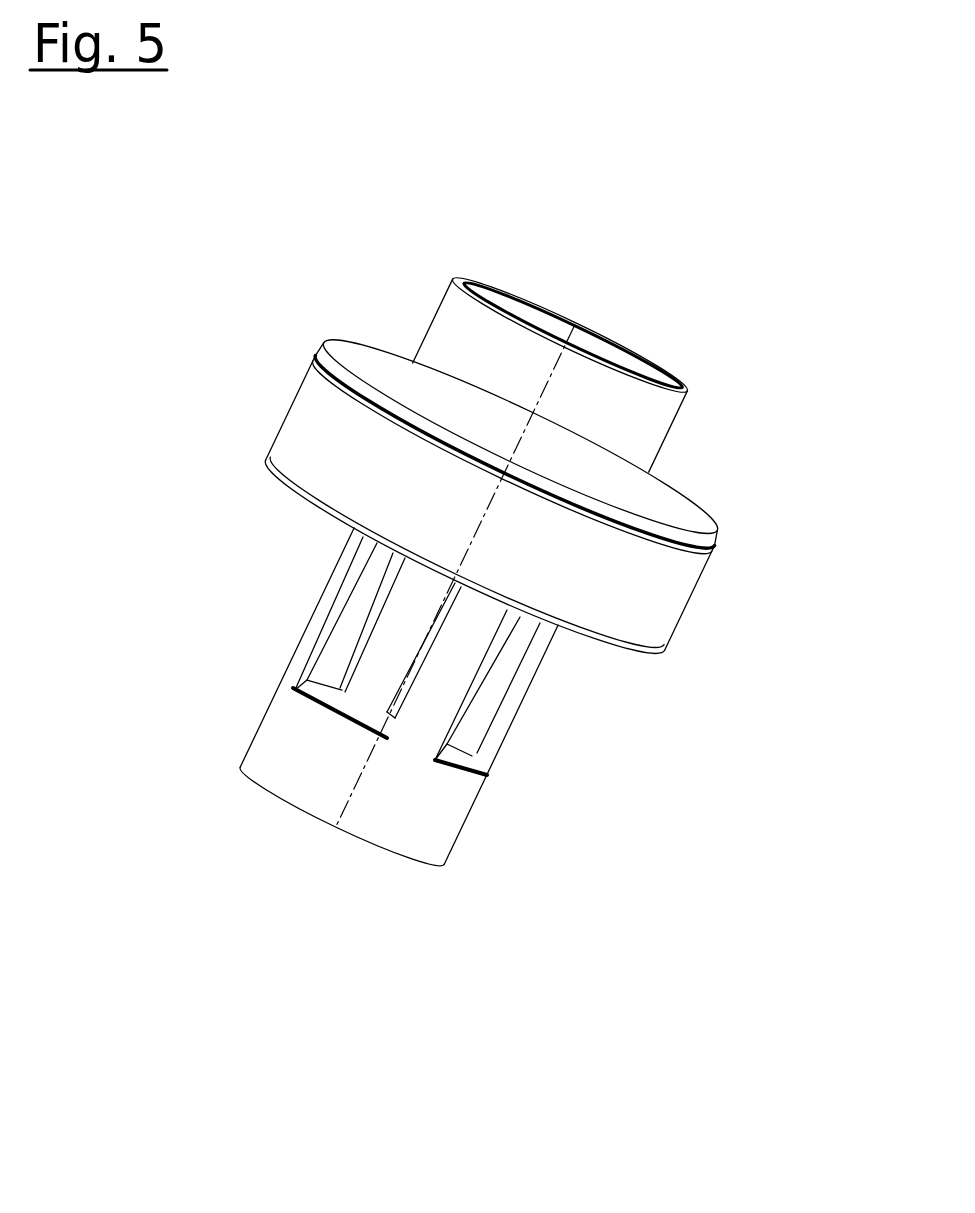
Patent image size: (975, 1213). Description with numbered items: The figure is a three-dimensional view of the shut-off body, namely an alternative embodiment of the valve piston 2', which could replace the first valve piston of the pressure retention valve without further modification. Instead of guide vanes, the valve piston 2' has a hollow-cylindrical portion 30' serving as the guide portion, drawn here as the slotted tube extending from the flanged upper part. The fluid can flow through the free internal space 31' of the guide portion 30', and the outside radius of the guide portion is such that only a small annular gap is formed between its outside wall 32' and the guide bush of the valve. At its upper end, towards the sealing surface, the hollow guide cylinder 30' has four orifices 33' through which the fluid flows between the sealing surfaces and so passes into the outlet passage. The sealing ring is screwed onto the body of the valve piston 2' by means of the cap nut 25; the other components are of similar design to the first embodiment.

The valve piston 2' is at (465, 580).
The cap nut 25 is at (290, 440).
The hollow-cylindrical portion 30' is at (510, 794).
The free internal space 31' is at (340, 914).
The outside wall 32' is at (399, 721).
The orifices 33' is at (460, 727).